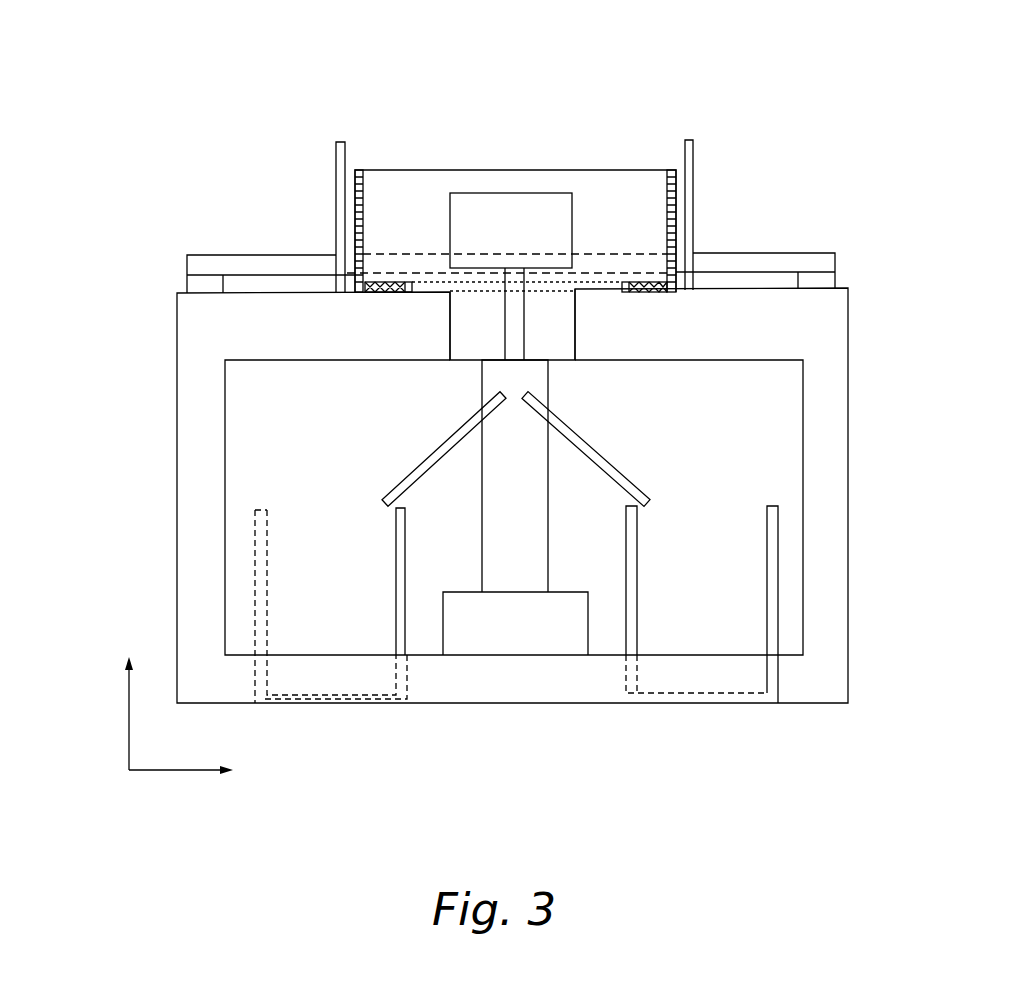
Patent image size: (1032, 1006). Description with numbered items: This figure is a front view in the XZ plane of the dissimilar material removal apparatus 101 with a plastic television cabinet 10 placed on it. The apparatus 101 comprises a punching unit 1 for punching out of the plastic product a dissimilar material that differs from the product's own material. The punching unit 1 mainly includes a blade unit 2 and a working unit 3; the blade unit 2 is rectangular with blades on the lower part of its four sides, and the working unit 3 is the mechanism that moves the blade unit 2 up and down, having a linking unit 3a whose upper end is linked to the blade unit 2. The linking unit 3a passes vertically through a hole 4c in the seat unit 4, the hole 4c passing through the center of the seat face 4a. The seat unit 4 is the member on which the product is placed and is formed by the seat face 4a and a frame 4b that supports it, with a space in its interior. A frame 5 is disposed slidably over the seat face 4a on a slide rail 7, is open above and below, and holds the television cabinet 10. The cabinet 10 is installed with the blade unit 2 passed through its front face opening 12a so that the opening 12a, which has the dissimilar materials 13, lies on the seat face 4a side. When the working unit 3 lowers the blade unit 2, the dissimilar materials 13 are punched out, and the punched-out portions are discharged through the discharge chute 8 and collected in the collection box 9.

The dissimilar material removal apparatus 101 is at (146, 176).
The punching unit 1 is at (624, 199).
The blade unit 2 is at (512, 203).
The working unit 3 is at (505, 568).
The linking unit 3a is at (512, 328).
The seat unit 4 is at (191, 328).
The seat face 4a is at (278, 290).
The frame 4b is at (203, 437).
The hole 4c is at (470, 330).
The frame 5 is at (688, 214).
The slide rail 7 is at (740, 263).
The discharge chute 8 is at (615, 470).
The collection box 9 is at (347, 698).
The television cabinet 10 is at (673, 175).
The front face opening 12a is at (563, 283).
The dissimilar materials 13 is at (388, 288).